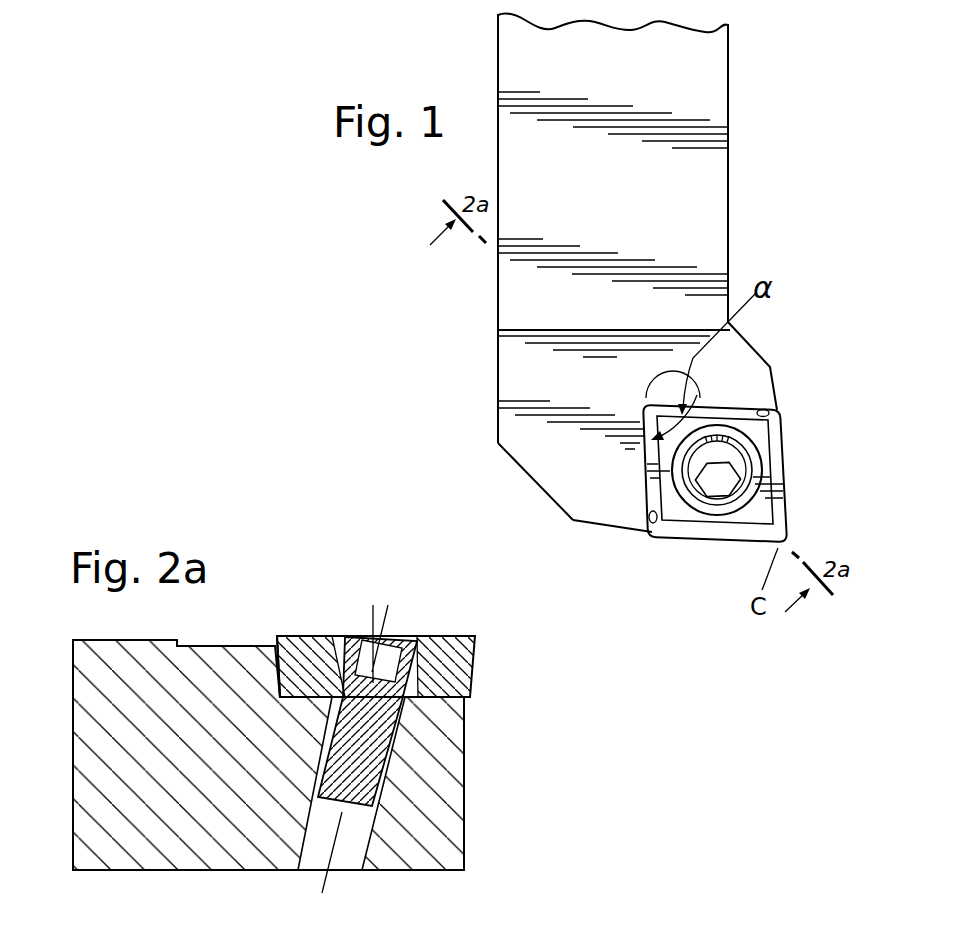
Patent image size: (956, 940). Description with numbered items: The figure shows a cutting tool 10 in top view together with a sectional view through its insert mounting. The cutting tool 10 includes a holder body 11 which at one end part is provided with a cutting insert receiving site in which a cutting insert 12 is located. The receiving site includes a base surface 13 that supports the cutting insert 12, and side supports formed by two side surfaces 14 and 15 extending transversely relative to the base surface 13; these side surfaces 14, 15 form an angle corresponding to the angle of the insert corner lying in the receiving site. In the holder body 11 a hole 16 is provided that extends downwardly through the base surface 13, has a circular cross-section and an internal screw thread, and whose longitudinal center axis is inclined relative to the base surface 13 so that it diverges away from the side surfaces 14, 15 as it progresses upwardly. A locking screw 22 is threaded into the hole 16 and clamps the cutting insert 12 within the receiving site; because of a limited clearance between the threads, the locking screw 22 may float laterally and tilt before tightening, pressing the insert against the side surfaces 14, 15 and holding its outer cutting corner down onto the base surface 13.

In FIG. 1, the cutting tool 10 is at (735, 86).
In FIG. 1, the holder body 11 is at (718, 220).
In FIG. 2A, the holder body 11 is at (242, 845).
In FIG. 1, the cutting insert 12 is at (784, 520).
In FIG. 2A, the cutting insert 12 is at (458, 658).
In FIG. 2A, the base surface 13 is at (450, 682).
In FIG. 1, the side surface 14 is at (655, 532).
In FIG. 1, the side surface 15 is at (777, 413).
In FIG. 2A, the side surface 15 is at (283, 673).
In FIG. 2A, the hole 16 is at (347, 845).
In FIG. 1, the locking screw 22 is at (734, 424).
In FIG. 2A, the locking screw 22 is at (395, 628).